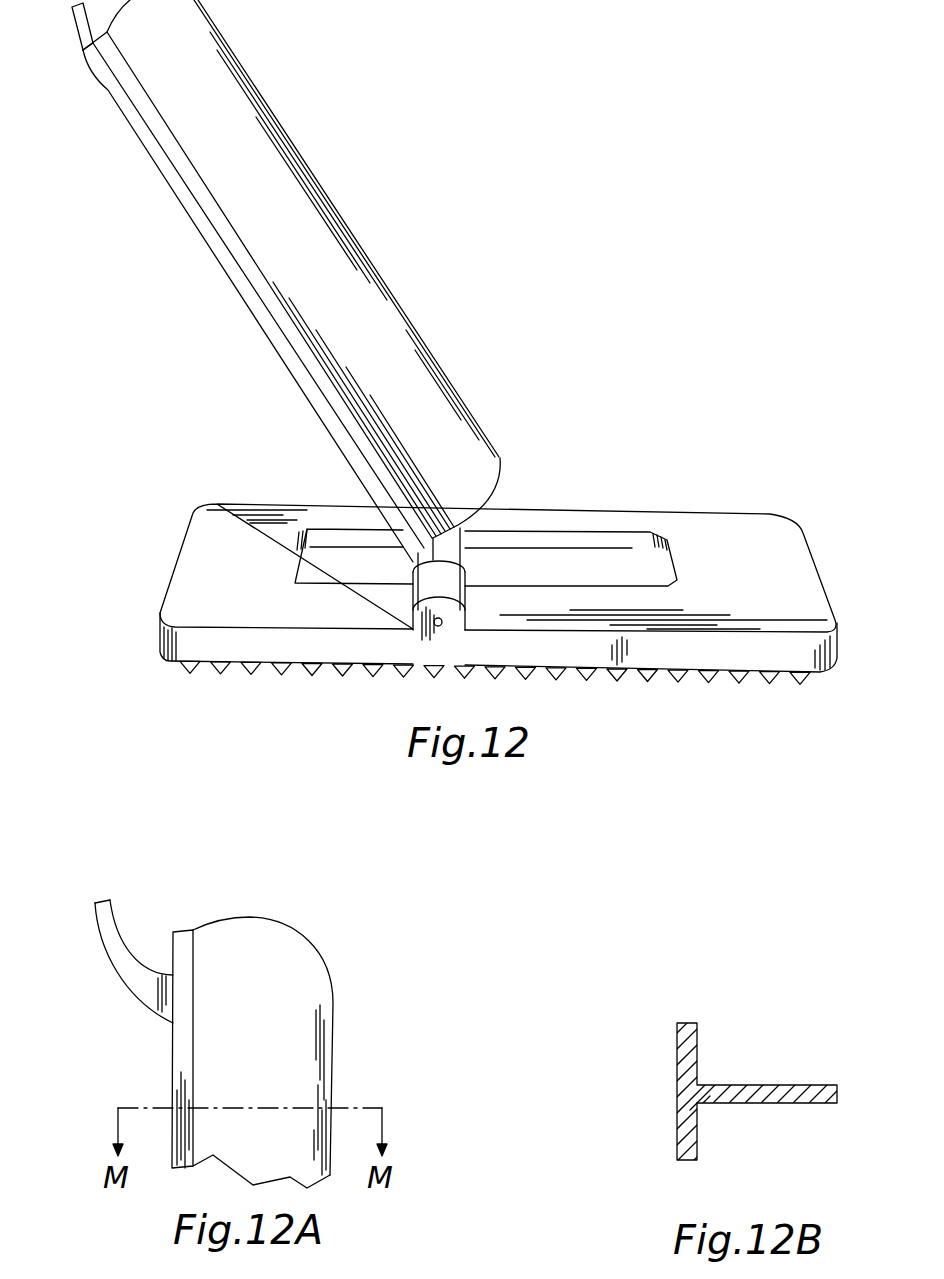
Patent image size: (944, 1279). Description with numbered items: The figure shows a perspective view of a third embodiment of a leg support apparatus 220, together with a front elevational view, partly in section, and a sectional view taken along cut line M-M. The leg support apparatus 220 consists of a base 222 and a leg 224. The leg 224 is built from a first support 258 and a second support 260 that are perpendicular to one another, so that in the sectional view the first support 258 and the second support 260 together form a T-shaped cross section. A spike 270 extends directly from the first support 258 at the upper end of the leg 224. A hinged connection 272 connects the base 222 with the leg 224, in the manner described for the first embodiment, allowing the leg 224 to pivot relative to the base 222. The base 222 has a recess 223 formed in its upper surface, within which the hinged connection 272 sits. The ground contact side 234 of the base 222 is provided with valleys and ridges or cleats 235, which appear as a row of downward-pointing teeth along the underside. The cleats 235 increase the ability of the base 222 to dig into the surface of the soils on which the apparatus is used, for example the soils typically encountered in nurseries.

In FIG. 12, the leg support apparatus 220 is at (252, 110).
In FIG. 12A, the leg support apparatus 220 is at (298, 1002).
In FIG. 12B, the leg support apparatus 220 is at (687, 1042).
In FIG. 12, the base 222 is at (748, 543).
In FIG. 12, the recess 223 is at (583, 562).
In FIG. 12, the leg 224 is at (365, 297).
In FIG. 12, the ground contact side 234 is at (697, 674).
In FIG. 12, the cleats 235 is at (343, 673).
In FIG. 12, the first support 258 is at (216, 265).
In FIG. 12A, the first support 258 is at (172, 1048).
In FIG. 12B, the first support 258 is at (678, 1068).
In FIG. 12, the second support 260 is at (295, 207).
In FIG. 12A, the second support 260 is at (303, 1062).
In FIG. 12B, the second support 260 is at (772, 1087).
In FIG. 12, the spike 270 is at (77, 28).
In FIG. 12A, the spike 270 is at (110, 925).
In FIG. 12, the hinged connection 272 is at (458, 556).